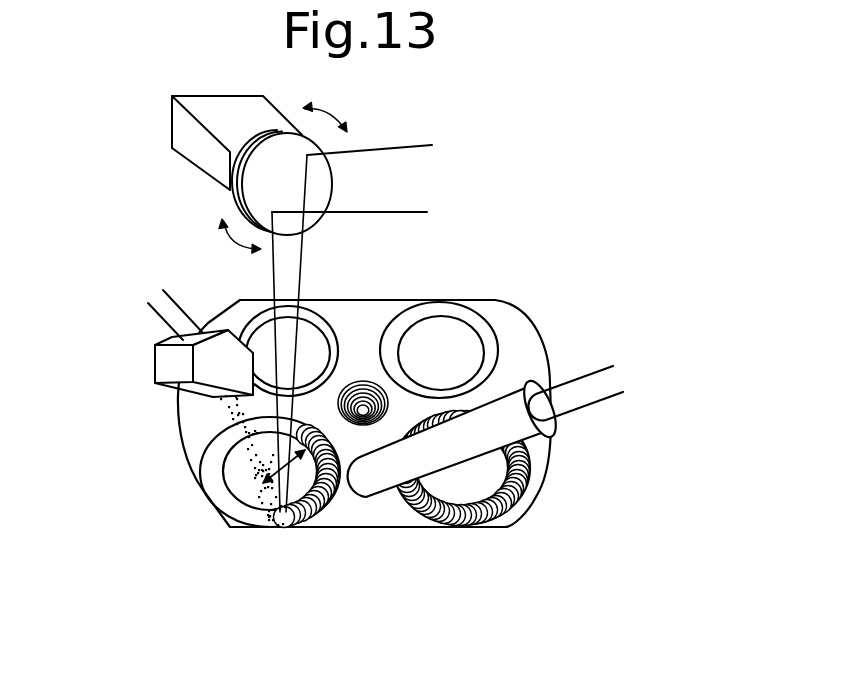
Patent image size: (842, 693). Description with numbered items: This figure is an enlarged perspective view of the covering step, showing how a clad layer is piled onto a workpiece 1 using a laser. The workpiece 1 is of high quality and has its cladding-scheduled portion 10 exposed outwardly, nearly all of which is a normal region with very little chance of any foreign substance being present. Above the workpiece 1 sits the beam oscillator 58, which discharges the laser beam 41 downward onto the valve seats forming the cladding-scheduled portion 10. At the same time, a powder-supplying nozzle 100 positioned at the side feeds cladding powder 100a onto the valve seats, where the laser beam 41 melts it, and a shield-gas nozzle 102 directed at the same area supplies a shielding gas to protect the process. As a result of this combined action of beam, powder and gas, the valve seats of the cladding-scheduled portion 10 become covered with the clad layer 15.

The workpiece 1 is at (513, 340).
The cladding-scheduled portion 10 is at (330, 322).
The clad layer 15 is at (323, 528).
The laser beam 41 is at (395, 163).
The beam oscillator 58 is at (207, 158).
The powder-supplying nozzle 100 is at (173, 370).
The cladding powder 100a is at (250, 470).
The shield-gas nozzle 102 is at (493, 528).